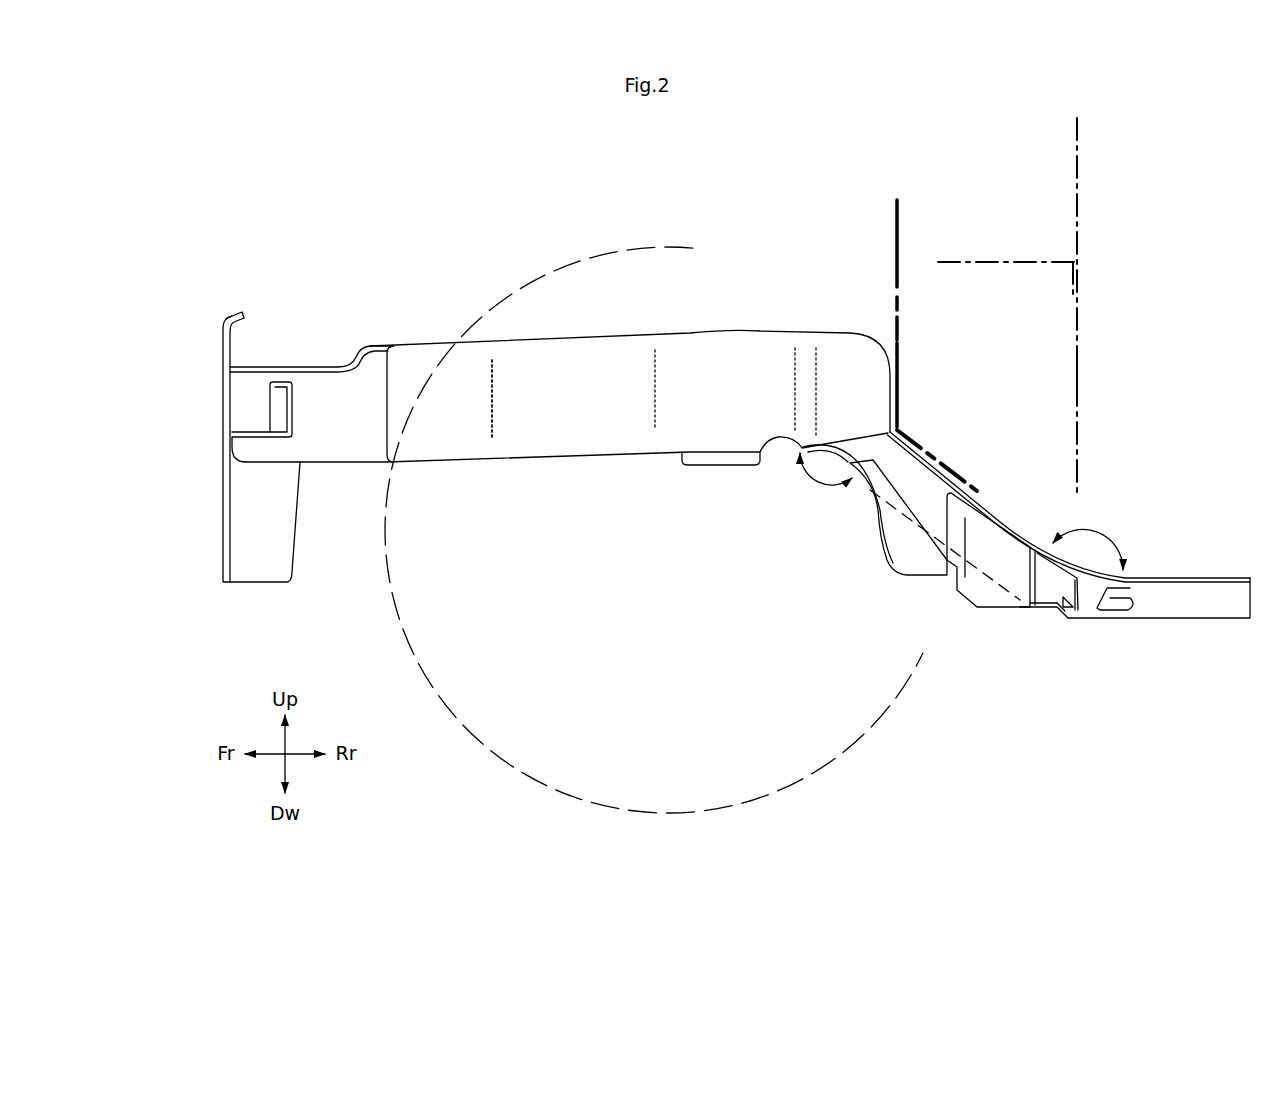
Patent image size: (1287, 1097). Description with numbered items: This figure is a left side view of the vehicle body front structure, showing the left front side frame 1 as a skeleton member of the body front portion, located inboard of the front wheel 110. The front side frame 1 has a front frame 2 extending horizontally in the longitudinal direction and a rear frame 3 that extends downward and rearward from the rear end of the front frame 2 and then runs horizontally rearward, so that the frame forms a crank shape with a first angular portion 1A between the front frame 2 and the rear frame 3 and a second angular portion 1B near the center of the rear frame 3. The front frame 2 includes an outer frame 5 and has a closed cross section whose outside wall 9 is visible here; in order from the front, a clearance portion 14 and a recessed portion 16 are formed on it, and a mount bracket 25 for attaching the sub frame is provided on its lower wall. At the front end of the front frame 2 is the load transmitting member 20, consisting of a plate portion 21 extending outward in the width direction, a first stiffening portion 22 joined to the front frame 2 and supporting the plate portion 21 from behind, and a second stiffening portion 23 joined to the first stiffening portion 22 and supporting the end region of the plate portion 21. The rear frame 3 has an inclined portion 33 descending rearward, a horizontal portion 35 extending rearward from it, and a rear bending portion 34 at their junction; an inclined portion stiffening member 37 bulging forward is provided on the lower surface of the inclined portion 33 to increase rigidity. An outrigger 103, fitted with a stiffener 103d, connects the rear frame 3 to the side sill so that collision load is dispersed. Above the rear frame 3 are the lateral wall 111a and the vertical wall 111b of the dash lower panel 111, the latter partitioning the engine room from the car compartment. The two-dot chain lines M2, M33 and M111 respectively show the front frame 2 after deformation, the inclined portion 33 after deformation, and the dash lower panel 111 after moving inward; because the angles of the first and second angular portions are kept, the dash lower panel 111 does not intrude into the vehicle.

The front side frame 1 is at (523, 250).
The front frame 2 is at (568, 360).
The rear frame 3 is at (1135, 641).
The outer frame 5 is at (573, 429).
The outside wall 9 is at (558, 423).
The clearance portion 14 is at (498, 385).
The recessed portion 16 is at (803, 375).
The load transmitting member 20 is at (237, 424).
The plate portion 21 is at (224, 403).
The first stiffening portion 22 is at (310, 393).
The second stiffening portion 23 is at (295, 415).
The mount bracket 25 is at (707, 455).
The inclined portion 33 is at (905, 514).
The rear bending portion 34 is at (1108, 535).
The horizontal portion 35 is at (1156, 610).
The inclined portion stiffening member 37 is at (925, 568).
The outrigger 103 is at (985, 597).
The stiffener 103d is at (1073, 610).
The front wheel 110 is at (455, 720).
The dash lower panel 111 is at (890, 332).
The lateral wall 111a is at (957, 477).
The vertical wall 111b is at (893, 267).
The first angular portion 1A is at (824, 492).
The second angular portion 1B is at (1069, 521).
The two-dot chain line showing dash lower panel after moving M111 is at (1080, 211).
The two-dot chain line showing front frame after deformation M2 is at (1007, 268).
The two-dot chain line showing inclined portion after deformation M33 is at (1080, 378).